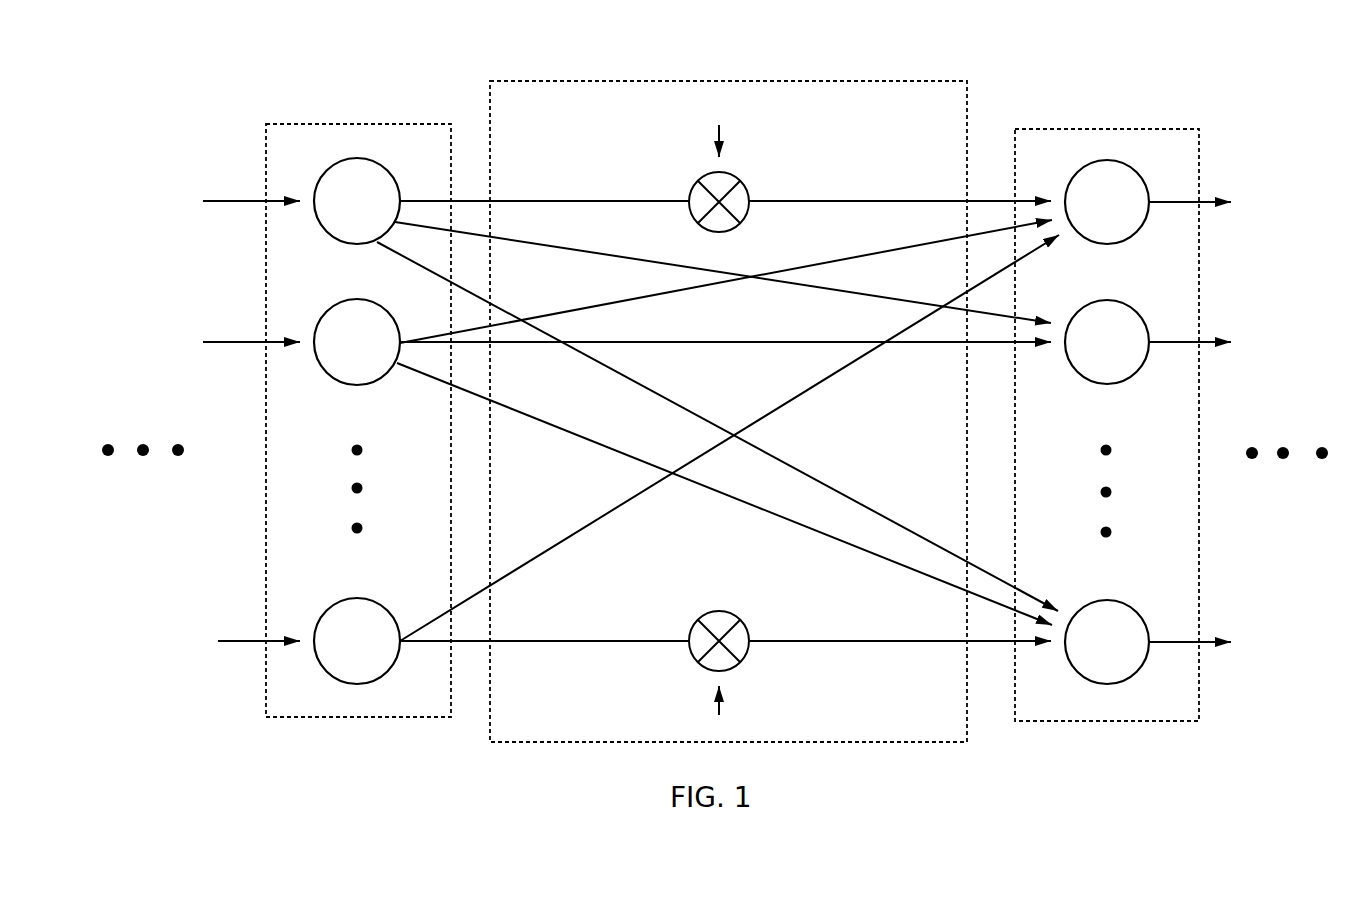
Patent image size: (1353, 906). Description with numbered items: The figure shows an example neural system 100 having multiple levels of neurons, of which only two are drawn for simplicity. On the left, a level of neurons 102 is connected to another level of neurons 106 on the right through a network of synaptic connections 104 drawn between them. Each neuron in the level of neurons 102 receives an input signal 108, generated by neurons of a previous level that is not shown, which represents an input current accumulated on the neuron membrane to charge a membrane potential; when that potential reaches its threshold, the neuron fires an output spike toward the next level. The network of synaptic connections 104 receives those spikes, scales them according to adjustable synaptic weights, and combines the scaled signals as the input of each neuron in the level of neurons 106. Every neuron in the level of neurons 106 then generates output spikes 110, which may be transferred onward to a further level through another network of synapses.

The neural system 100 is at (210, 68).
The level of neurons 102 is at (314, 124).
The network of synaptic connections 104 is at (900, 81).
The level of neurons 106 is at (1092, 129).
The input signal 108 is at (180, 620).
The output spikes 110 is at (1287, 165).